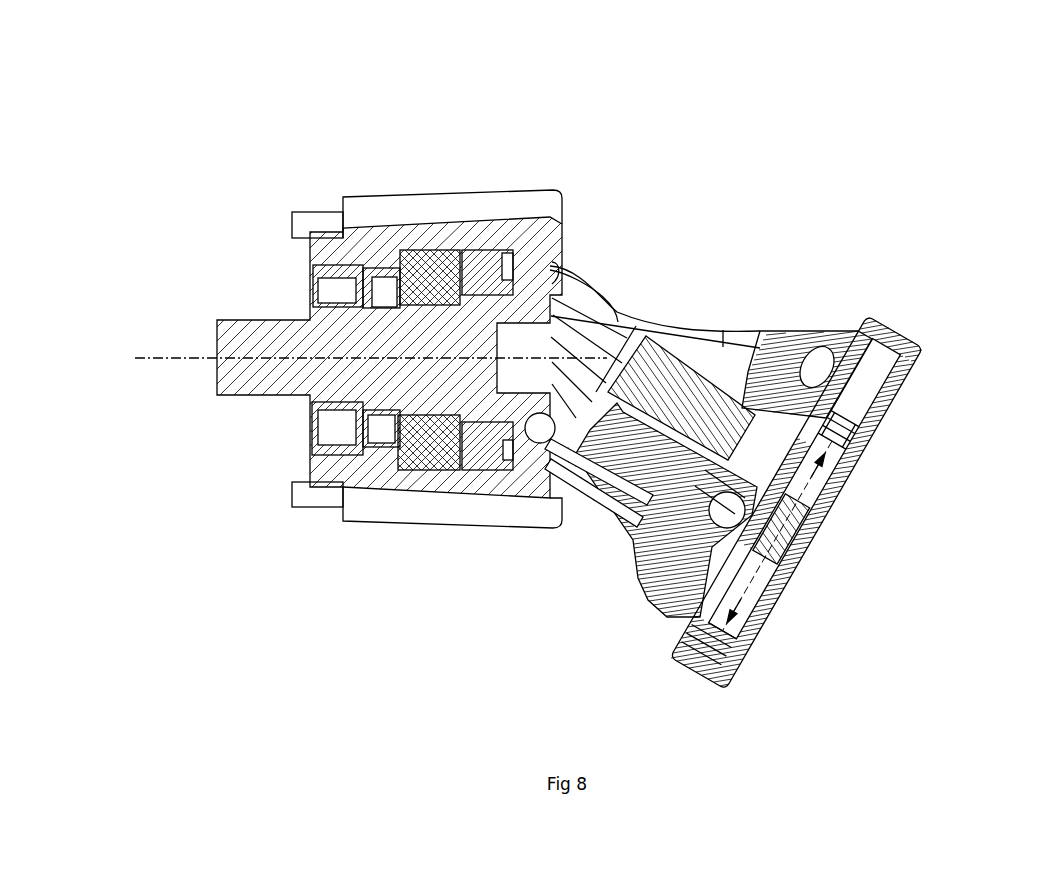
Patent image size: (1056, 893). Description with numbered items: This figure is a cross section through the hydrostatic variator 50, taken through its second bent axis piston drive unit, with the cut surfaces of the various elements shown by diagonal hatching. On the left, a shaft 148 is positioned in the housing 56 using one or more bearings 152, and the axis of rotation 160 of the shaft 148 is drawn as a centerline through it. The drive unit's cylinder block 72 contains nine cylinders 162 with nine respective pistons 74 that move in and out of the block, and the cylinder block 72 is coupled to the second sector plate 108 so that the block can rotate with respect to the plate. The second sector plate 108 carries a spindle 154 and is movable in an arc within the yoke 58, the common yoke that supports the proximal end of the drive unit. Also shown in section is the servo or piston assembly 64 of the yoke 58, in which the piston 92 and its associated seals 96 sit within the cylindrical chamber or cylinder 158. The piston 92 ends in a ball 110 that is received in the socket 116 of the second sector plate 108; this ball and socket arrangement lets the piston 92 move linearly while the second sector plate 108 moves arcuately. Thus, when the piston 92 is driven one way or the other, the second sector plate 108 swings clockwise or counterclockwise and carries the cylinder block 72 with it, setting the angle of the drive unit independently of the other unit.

The hydrostatic variator 50 is at (172, 121).
The housing 56 is at (360, 198).
The yoke 58 is at (842, 330).
The second servo assembly 64 is at (778, 648).
The cylinder block 72 is at (684, 346).
The piston 74 is at (590, 462).
The piston 92 is at (762, 552).
The seals 96 is at (853, 438).
The second sector plate 108 is at (764, 428).
The ball 110 is at (710, 503).
The socket 116 is at (720, 489).
The shaft 148 is at (225, 400).
The bearings 152 is at (312, 462).
The spindle 154 is at (637, 347).
The cylinder 158 is at (872, 388).
The axis of rotation 160 is at (183, 357).
The cylinders 162 is at (600, 452).